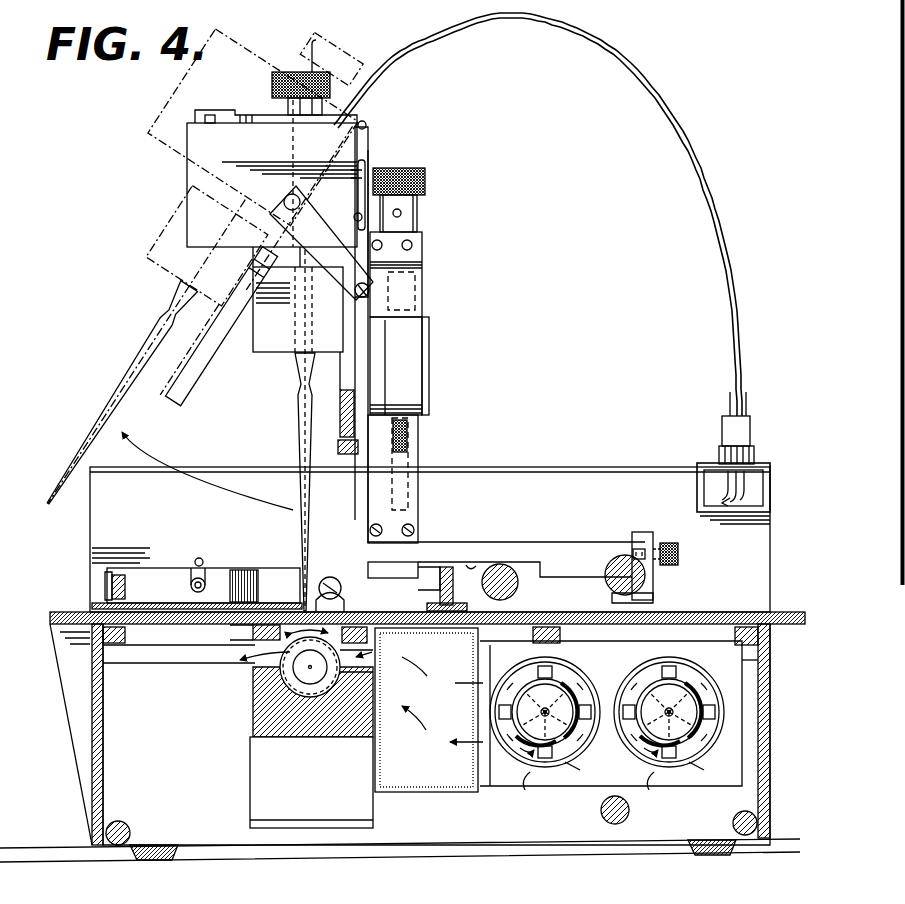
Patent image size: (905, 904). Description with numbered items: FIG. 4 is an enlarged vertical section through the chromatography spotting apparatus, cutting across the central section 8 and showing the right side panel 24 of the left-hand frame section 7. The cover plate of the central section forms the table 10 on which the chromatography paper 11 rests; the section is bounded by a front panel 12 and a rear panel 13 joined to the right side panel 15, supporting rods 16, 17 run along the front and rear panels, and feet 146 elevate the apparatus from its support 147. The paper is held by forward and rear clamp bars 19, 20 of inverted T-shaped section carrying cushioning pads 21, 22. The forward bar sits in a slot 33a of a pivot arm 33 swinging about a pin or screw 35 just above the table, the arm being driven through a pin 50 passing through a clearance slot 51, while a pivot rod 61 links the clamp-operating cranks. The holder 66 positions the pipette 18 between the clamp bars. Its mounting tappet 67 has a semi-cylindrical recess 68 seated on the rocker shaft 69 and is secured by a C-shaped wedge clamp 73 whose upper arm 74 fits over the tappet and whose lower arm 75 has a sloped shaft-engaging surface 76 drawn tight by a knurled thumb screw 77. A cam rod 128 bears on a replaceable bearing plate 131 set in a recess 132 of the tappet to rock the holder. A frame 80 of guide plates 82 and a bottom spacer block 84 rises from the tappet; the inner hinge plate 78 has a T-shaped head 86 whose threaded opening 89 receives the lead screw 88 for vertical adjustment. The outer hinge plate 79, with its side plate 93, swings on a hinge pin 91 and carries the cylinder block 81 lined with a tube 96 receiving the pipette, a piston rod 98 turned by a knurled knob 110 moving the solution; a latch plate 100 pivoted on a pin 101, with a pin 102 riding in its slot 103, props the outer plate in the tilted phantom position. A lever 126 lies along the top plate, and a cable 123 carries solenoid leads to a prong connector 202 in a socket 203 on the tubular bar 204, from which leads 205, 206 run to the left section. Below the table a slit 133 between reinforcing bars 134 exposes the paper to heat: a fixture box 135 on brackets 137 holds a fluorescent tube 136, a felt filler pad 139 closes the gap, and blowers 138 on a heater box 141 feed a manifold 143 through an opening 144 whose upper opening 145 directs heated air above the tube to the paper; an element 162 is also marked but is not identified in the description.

The left-hand frame section 7 is at (522, 460).
The central section 8 is at (774, 786).
The cover plate (table) 10 is at (712, 612).
The chromatography paper 11 is at (780, 611).
The front panel 12 is at (100, 749).
The rear panel 13 is at (771, 686).
The right side panel 15 is at (462, 845).
The supporting rod 16 is at (105, 831).
The supporting rod 17 is at (758, 823).
The pipette 18 is at (140, 345).
The forward clamp bar 19 is at (108, 588).
The rear clamp bar 20 is at (438, 588).
The cushioning pad 21 is at (98, 606).
The cushioning pad 22 is at (428, 607).
The right side panel 24 is at (578, 466).
The pivot arm 33 is at (160, 578).
The slot 33a is at (120, 575).
The pin or screw 35 is at (338, 578).
The pin 50 is at (206, 583).
The clearance slot 51 is at (203, 560).
The pivot rod 61 is at (630, 810).
The holder 66 is at (452, 132).
The mounting tappet 67 is at (536, 540).
The semi-cylindrical recess 68 is at (636, 553).
The rocker shaft 69 is at (609, 570).
The wedge clamp element 73 is at (650, 560).
The upper arm 74 is at (640, 552).
The lower arm 75 is at (612, 599).
The shaft engaging surface 76 is at (656, 594).
The knurled thumb screw 77 is at (680, 552).
The inner hinge plate 78 is at (388, 343).
The outer hinge plate 79 is at (200, 365).
The frame 80 is at (420, 436).
The dispensing cylinder block 81 is at (256, 345).
The guide plate 82 is at (410, 368).
The bottom spacer block 84 is at (410, 515).
The T-shaped head 86 is at (429, 393).
The lead screw 88 is at (420, 167).
The threaded opening 89 is at (410, 260).
The hinge pin 91 is at (368, 121).
The side plate 93 is at (205, 154).
The cylinder tube 96 is at (295, 322).
The piston rod 98 is at (355, 255).
The latch plate 100 is at (370, 170).
The pin 101 is at (370, 289).
The pin 102 is at (445, 227).
The slot 103 is at (400, 211).
The knurled knob 110 is at (300, 68).
The cable 123 is at (678, 126).
The lever 126 is at (214, 108).
The cam rod 128 is at (520, 585).
The bearing plate 131 is at (473, 563).
The recess 132 is at (415, 566).
The central slit 133 is at (278, 592).
The reinforcing bar 134 is at (758, 634).
The electrical fixture box 135 is at (250, 778).
The fluorescent illumination tube 136 is at (282, 668).
The bracket 137 is at (250, 820).
The blower 138 is at (648, 672).
The felt filler pad 139 is at (253, 724).
The heater box 141 is at (542, 765).
The manifold 143 is at (392, 788).
The opening 144 is at (475, 760).
The elongated upper opening 145 is at (360, 665).
The foot 146 is at (142, 862).
The support 147 is at (520, 858).
The support 162 is at (374, 896).
The prong connector 202 is at (752, 445).
The socket 203 is at (766, 472).
The tubular bar 204 is at (695, 475).
The lead 205 is at (748, 494).
The lead 206 is at (737, 514).